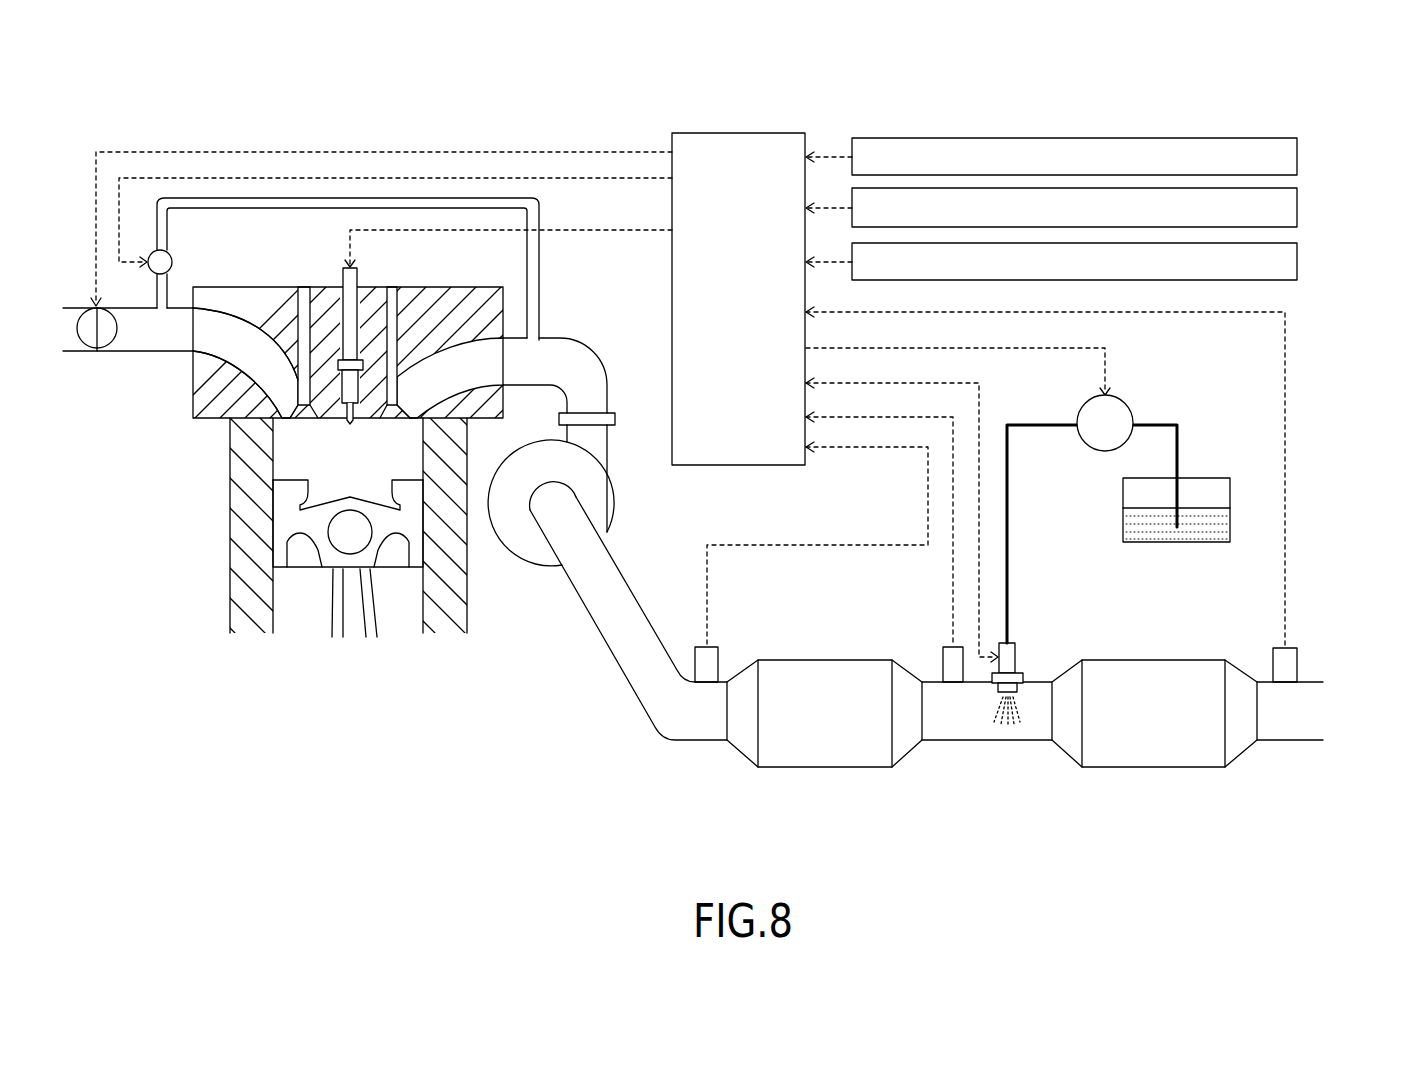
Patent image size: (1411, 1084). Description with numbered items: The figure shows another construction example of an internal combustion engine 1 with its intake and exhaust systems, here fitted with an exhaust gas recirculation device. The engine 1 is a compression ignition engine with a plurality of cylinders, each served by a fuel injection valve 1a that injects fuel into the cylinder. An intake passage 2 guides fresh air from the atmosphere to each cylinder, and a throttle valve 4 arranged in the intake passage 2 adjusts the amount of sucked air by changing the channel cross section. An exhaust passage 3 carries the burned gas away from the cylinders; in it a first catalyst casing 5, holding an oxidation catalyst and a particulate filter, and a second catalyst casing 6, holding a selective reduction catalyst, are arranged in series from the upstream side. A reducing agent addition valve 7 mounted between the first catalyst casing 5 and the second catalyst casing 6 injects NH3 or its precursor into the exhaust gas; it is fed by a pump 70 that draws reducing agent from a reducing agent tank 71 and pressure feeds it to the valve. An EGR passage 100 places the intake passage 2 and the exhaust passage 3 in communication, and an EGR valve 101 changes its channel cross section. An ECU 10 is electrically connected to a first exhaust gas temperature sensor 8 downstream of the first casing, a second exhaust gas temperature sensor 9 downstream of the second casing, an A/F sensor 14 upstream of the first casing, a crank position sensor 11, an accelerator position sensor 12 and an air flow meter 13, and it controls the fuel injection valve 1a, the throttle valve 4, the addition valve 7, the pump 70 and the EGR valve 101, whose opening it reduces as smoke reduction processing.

The internal combustion engine 1 is at (222, 540).
The fuel injection valve 1a is at (360, 275).
The intake passage 2 is at (150, 353).
The exhaust passage 3 is at (558, 338).
The throttle valve 4 is at (80, 353).
The first catalyst casing 5 is at (830, 768).
The second catalyst casing 6 is at (1170, 768).
The reducing agent addition valve 7 is at (1010, 640).
The first exhaust gas temperature sensor 8 is at (943, 650).
The second exhaust gas temperature sensor 9 is at (1297, 660).
The ECU 10 is at (770, 133).
The crank position sensor 11 is at (1297, 262).
The accelerator position sensor 12 is at (1297, 208).
The air flow meter 13 is at (1297, 157).
The A/F sensor 14 is at (718, 648).
The pump 70 is at (1125, 405).
The reducing agent tank 71 is at (1213, 478).
The EGR passage 100 is at (540, 205).
The EGR valve 101 is at (172, 262).